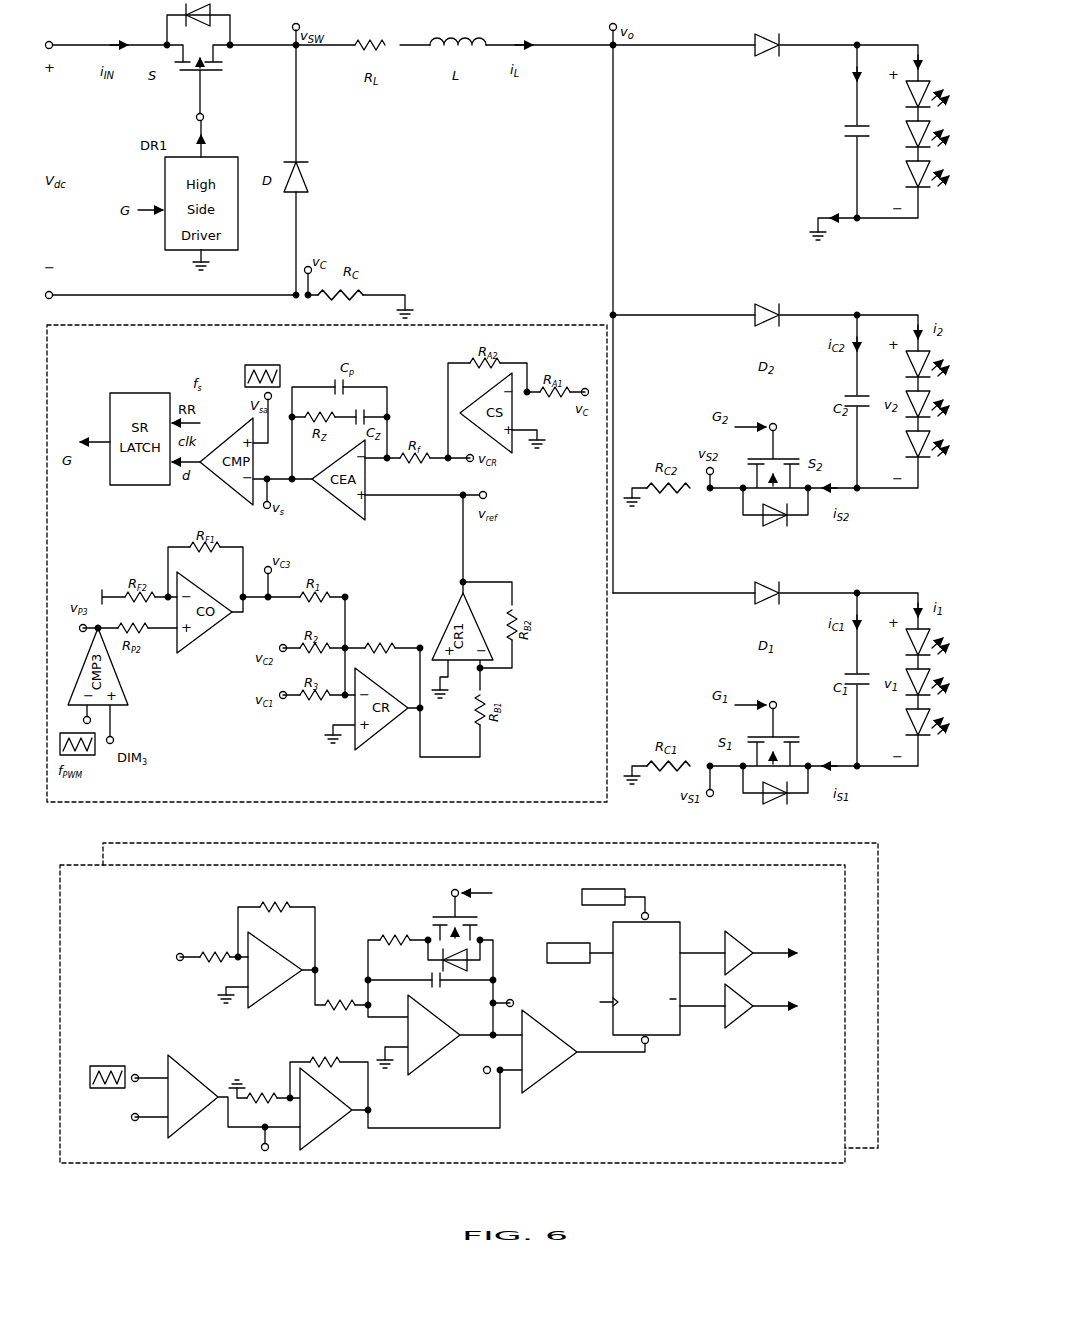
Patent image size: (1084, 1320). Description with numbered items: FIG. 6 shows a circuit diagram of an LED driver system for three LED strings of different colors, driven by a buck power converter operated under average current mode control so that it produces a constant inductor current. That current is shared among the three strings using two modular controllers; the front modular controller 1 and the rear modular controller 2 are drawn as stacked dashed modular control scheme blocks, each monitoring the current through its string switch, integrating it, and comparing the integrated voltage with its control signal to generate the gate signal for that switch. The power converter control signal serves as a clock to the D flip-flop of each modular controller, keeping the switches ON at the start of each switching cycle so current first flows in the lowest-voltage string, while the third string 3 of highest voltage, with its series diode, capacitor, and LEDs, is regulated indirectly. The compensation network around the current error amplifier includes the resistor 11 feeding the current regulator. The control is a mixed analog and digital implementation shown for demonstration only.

The first modular control module 1 is at (452, 1014).
The second modular control module 2 is at (490, 995).
The third LED string 3 is at (781, 137).
The resistor R11 11 is at (370, 640).